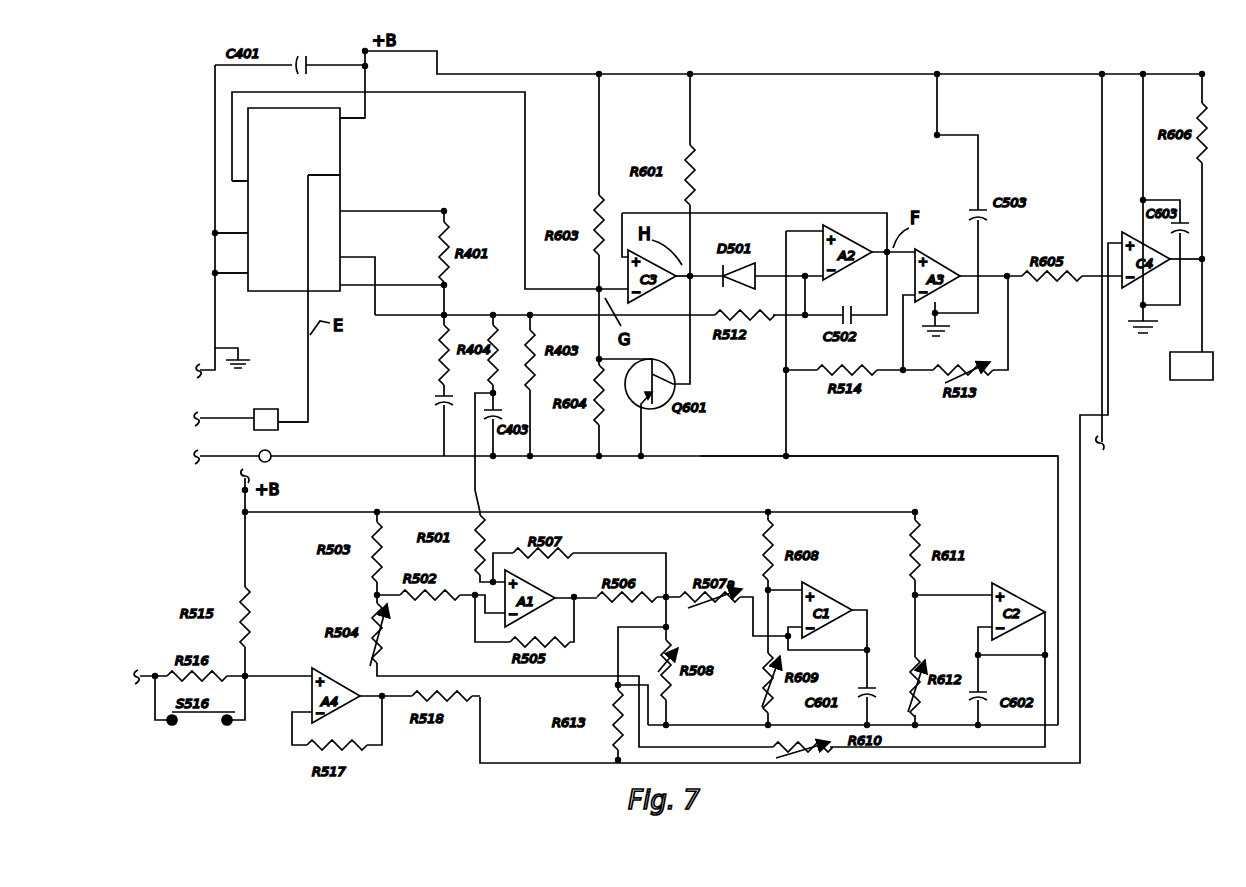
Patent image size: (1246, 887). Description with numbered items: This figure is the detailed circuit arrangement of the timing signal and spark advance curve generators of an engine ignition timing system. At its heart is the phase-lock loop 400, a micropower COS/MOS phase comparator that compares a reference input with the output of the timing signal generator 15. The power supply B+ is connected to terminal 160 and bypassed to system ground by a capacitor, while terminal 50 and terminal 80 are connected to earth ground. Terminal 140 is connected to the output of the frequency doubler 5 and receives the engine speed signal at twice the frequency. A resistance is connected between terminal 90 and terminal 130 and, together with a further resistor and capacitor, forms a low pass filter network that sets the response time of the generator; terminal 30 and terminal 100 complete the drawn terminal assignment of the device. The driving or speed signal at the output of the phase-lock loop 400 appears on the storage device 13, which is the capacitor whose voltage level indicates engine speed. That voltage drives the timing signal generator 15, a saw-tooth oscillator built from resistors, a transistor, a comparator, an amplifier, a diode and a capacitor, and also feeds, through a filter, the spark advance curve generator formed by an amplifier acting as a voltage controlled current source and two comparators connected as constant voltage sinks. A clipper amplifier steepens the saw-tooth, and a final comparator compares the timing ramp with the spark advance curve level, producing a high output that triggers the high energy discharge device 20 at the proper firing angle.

The frequency doubler 5 is at (285, 428).
The storage device 13 is at (425, 400).
The timing signal generator 15 is at (820, 410).
The high energy discharge device 20 is at (1193, 368).
The phase-lock loop 400 is at (297, 291).
The terminal 30 is at (251, 182).
The terminal 50 is at (242, 234).
The terminal 80 is at (242, 274).
The terminal 90 is at (380, 286).
The terminal 100 is at (343, 283).
The terminal 130 is at (380, 211).
The terminal 140 is at (324, 164).
The terminal 160 is at (338, 118).